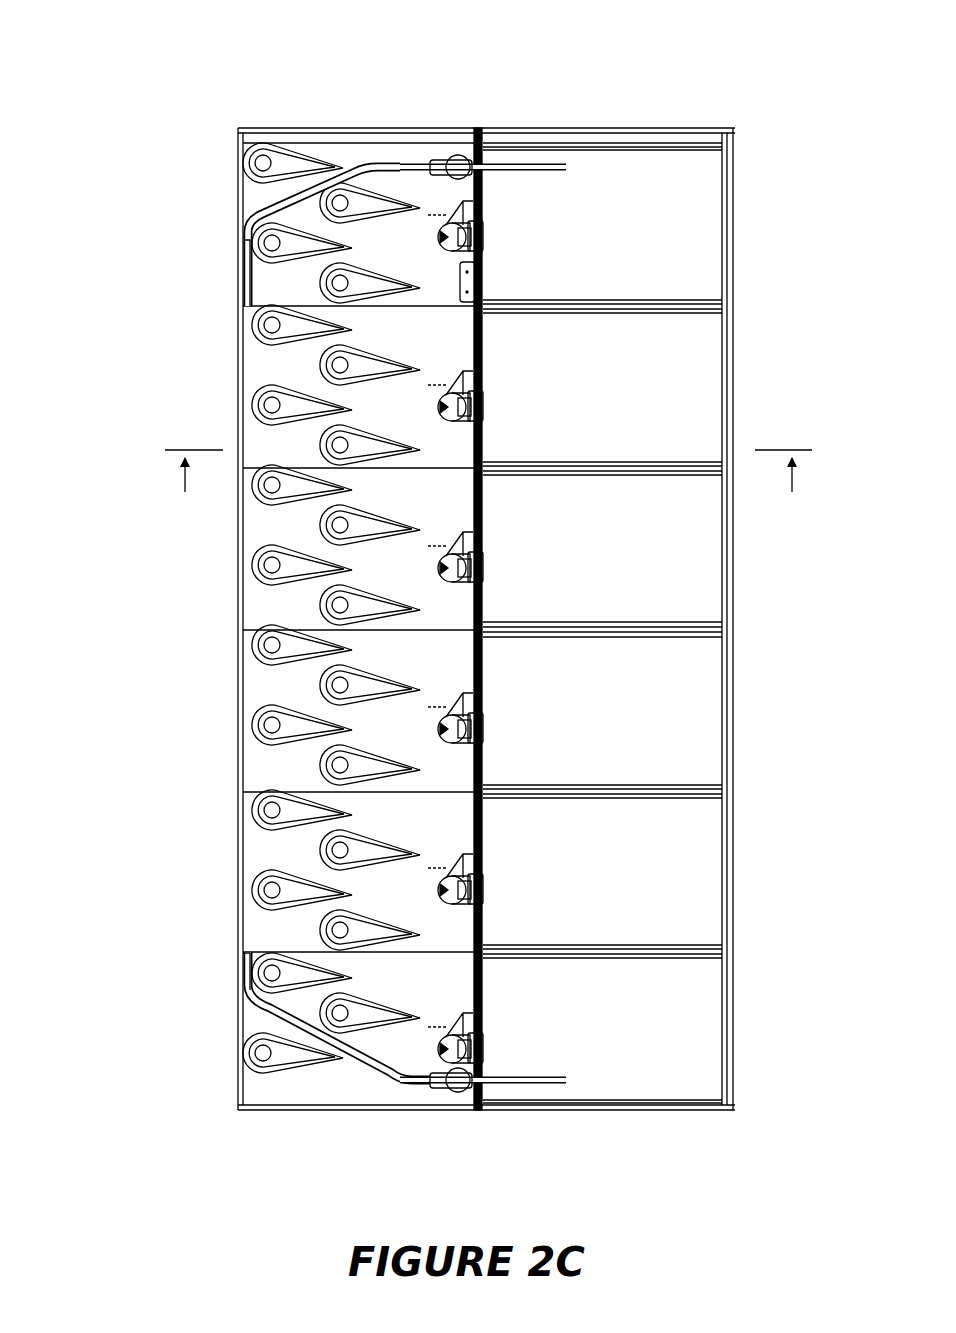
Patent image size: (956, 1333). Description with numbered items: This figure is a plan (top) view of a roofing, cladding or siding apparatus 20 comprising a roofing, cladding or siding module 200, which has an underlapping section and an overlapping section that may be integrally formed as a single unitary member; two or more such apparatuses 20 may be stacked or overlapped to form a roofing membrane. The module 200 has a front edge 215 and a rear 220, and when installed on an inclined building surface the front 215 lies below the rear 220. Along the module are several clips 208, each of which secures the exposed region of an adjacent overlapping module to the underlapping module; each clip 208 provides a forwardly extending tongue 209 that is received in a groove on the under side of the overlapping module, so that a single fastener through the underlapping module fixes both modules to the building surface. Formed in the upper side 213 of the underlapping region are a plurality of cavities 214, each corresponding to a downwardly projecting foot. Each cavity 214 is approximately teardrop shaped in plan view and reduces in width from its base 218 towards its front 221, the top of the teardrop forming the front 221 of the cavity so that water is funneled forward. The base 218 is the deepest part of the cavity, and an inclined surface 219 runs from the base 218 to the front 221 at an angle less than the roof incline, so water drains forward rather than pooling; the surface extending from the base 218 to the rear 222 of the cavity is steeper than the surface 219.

The roofing, cladding or siding apparatus 20 is at (138, 75).
The roofing, cladding or siding module 200 is at (685, 692).
The clip 208 is at (462, 162).
The tongue 209 is at (488, 233).
The upper side 213 is at (253, 935).
The cavity 214 is at (290, 724).
The front edge 215 is at (733, 755).
The base 218 is at (262, 408).
The surface 219 is at (302, 407).
The rear 220 is at (238, 905).
The front 221 is at (302, 750).
The rear 222 is at (250, 730).